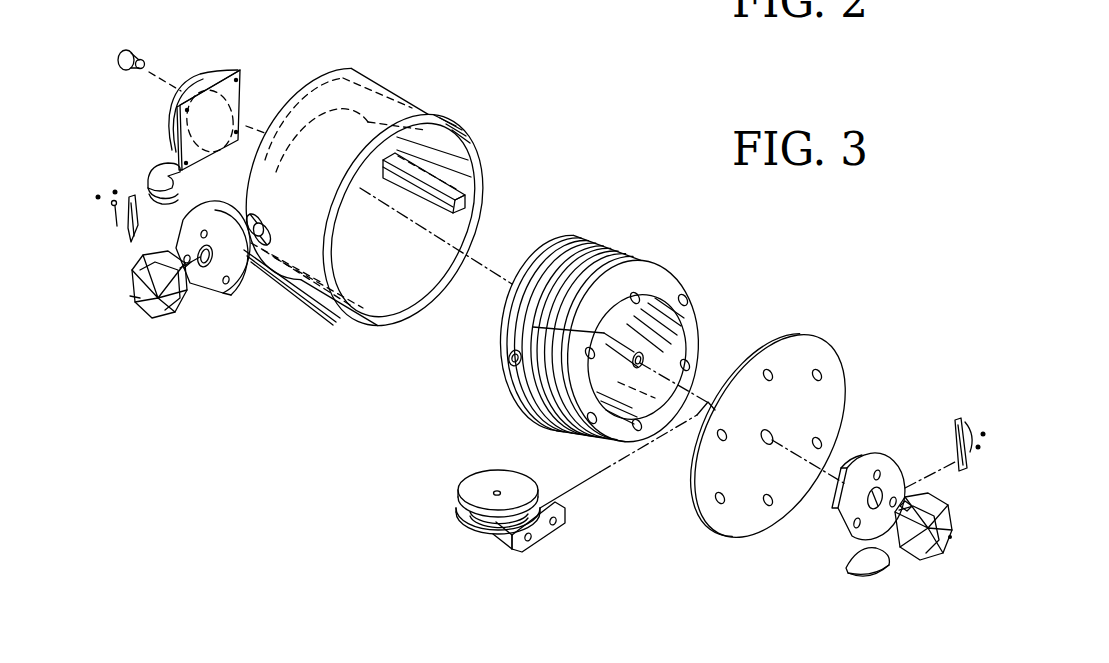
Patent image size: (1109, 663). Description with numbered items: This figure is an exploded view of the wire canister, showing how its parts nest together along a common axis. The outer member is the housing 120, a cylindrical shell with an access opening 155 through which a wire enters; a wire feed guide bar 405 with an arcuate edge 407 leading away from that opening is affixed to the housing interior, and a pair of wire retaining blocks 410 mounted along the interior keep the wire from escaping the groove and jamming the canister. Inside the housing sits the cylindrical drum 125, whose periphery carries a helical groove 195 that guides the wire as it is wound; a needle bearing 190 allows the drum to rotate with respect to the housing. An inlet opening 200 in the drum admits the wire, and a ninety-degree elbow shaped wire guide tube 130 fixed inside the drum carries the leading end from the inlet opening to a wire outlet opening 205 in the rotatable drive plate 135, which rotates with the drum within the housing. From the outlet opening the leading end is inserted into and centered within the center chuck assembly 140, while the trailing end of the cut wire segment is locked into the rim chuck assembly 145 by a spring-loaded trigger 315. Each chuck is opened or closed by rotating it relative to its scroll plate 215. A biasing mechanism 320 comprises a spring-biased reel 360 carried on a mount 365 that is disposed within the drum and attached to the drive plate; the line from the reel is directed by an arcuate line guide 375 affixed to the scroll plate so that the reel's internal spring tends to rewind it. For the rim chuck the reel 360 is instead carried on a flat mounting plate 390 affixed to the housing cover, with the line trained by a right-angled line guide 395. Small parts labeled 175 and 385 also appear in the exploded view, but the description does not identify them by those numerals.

The housing 120 is at (390, 195).
The cylindrical drum 125 is at (593, 335).
The wire guide tube 130 is at (640, 349).
The drive plate 135 is at (770, 429).
The center chuck assembly 140 is at (905, 578).
The rim chuck assembly 145 is at (177, 326).
The access opening 155 is at (262, 217).
The knob 175 is at (134, 49).
The needle bearing 190 is at (350, 196).
The groove 195 is at (640, 250).
The inlet opening 200 is at (509, 367).
The wire outlet opening 205 is at (771, 431).
The scroll plate 215 is at (846, 520).
The spring-loaded trigger 315 is at (954, 400).
The biasing mechanism 320 is at (362, 281).
The reel 360 is at (173, 106).
The mount for the reel 365 is at (557, 532).
The arcuate line guide 375 is at (843, 569).
The shaft 385 is at (780, 462).
The flat mounting plate 390 is at (241, 104).
The right-angled line guide 395 is at (160, 163).
The wire feed guide bar 405 is at (369, 95).
The arcuate edge 407 is at (366, 108).
The wire retaining blocks 410 is at (458, 202).